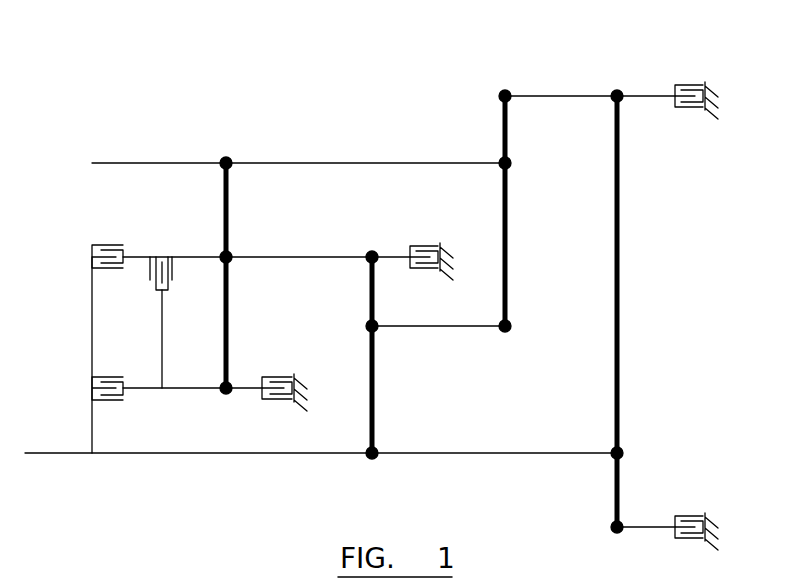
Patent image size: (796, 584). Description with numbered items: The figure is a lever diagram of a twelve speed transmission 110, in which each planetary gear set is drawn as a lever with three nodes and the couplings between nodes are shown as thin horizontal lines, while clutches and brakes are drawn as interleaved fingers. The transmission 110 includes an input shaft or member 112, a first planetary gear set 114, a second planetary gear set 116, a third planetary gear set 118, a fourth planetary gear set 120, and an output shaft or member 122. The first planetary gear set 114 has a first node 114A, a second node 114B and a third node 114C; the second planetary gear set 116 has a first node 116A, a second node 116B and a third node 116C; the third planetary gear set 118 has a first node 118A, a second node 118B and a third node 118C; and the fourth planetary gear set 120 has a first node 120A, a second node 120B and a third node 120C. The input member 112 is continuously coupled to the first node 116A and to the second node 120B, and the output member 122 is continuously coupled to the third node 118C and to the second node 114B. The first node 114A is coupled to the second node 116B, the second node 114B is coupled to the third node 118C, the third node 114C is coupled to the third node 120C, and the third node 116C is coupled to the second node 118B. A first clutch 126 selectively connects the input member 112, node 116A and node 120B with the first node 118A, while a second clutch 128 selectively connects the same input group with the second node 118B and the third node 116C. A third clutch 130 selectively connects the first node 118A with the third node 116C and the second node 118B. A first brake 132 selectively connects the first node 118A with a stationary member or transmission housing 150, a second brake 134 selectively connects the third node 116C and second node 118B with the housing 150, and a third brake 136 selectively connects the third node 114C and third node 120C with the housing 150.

The transmission 110 is at (708, 216).
The input shaft or member 112 is at (53, 456).
The first planetary gear set 114 is at (524, 206).
The first node of the first planetary gear set 114A is at (505, 334).
The second node of the first planetary gear set 114B is at (510, 165).
The third node of the first planetary gear set 114C is at (506, 90).
The second planetary gear set 116 is at (361, 352).
The first node of the second planetary gear set 116A is at (371, 461).
The second node of the second planetary gear set 116B is at (366, 325).
The third node of the second planetary gear set 116C is at (370, 253).
The third planetary gear set 118 is at (251, 257).
The first node of the third planetary gear set 118A is at (225, 395).
The second node of the third planetary gear set 118B is at (231, 254).
The third node of the third planetary gear set 118C is at (225, 160).
The fourth planetary gear set 120 is at (621, 277).
The first node of the fourth planetary gear set 120A is at (612, 525).
The second node of the fourth planetary gear set 120B is at (623, 450).
The third node of the fourth planetary gear set 120C is at (618, 90).
The output shaft or member 122 is at (114, 166).
The first clutch 126 is at (122, 378).
The second clutch 128 is at (108, 244).
The third clutch 130 is at (175, 272).
The first brake 132 is at (276, 402).
The second brake 134 is at (421, 245).
The third brake 136 is at (690, 83).
The stationary member or transmission housing 150 is at (300, 405).